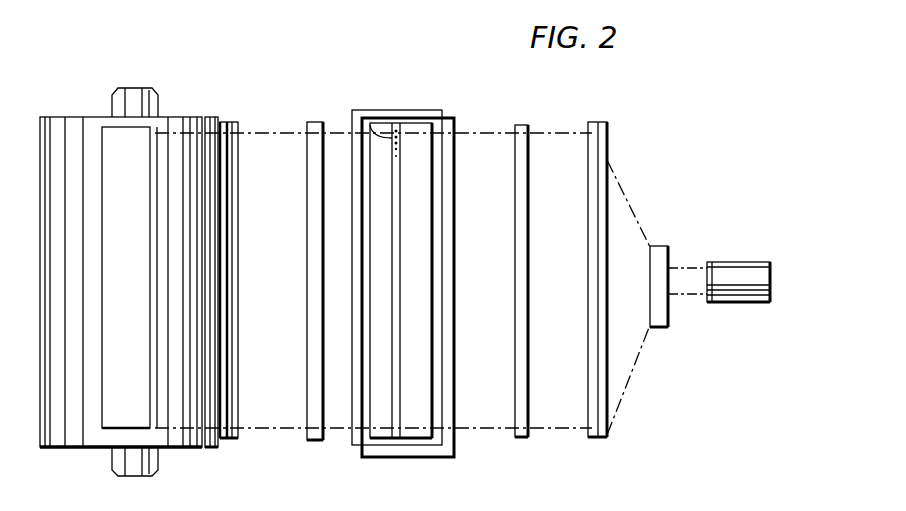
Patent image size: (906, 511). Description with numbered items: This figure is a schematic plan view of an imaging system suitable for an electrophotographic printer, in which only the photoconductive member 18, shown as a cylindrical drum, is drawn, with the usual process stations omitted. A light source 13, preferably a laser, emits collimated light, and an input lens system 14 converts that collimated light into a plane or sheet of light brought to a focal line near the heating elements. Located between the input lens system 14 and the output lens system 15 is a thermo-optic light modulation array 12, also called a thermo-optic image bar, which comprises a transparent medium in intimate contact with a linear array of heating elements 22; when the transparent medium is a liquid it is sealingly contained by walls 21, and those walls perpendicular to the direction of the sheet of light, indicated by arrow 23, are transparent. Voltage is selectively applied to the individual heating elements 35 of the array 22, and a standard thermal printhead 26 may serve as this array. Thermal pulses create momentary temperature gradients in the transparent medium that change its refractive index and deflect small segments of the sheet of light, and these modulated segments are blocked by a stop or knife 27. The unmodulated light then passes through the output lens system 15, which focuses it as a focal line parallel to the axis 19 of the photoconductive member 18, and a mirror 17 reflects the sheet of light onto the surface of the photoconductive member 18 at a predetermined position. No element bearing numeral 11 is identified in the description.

The ring 11 is at (545, 132).
The thermo-optic light modulation array 12 is at (375, 248).
The light source 13 is at (735, 296).
The input lens system 14 is at (638, 175).
The output lens system 15 is at (228, 122).
The mirror 17 is at (118, 398).
The photoconductive member 18 is at (190, 368).
The axis 19 is at (152, 96).
The walls 21 is at (352, 282).
The linear array of heating elements 22 is at (410, 188).
The arrow 23 is at (262, 463).
The thermal printhead 26 is at (417, 367).
The stop or knife 27 is at (313, 122).
The individual heating elements 35 is at (363, 112).